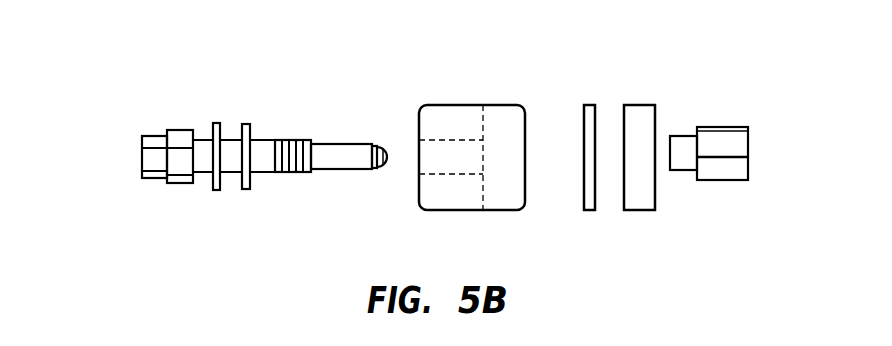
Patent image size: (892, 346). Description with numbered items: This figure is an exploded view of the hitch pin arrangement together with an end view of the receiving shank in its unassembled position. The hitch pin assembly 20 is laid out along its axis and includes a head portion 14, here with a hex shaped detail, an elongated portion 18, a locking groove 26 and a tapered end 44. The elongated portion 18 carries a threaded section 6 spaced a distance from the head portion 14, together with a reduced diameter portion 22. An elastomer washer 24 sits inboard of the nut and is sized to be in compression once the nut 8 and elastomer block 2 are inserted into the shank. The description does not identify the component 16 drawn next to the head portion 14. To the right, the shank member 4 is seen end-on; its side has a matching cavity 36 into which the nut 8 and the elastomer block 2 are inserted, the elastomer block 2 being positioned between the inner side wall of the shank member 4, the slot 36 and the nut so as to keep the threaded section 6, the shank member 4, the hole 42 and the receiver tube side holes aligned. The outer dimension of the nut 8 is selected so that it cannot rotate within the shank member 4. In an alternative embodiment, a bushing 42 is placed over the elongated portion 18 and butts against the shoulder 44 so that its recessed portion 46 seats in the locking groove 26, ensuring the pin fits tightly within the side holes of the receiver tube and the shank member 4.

The hitch pin assembly 20 is at (273, 80).
The head portion 14 is at (142, 153).
The nut 16 is at (187, 173).
The reduced diameter portion 22 is at (218, 190).
The elastomer washer 24 is at (248, 122).
The elongated portion 18 is at (264, 176).
The threaded section 6 is at (296, 140).
The locking groove 26 is at (377, 170).
The tapered end 44 is at (391, 146).
The cavity 36 is at (508, 114).
The shank member 4 is at (457, 196).
The hole 42 is at (467, 157).
The elastomer block 2 is at (590, 212).
The nut 8 is at (646, 212).
The recessed portion 46 is at (683, 136).